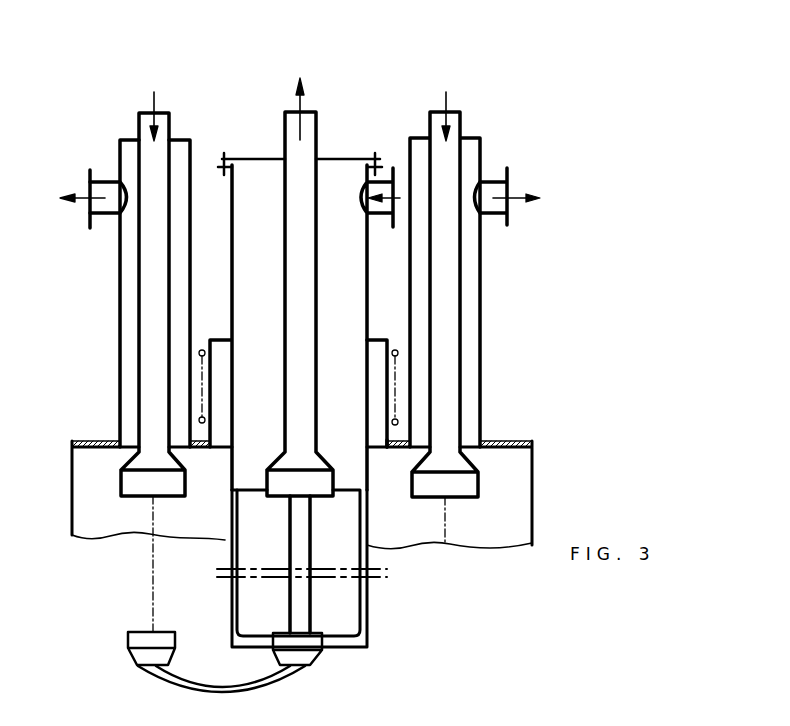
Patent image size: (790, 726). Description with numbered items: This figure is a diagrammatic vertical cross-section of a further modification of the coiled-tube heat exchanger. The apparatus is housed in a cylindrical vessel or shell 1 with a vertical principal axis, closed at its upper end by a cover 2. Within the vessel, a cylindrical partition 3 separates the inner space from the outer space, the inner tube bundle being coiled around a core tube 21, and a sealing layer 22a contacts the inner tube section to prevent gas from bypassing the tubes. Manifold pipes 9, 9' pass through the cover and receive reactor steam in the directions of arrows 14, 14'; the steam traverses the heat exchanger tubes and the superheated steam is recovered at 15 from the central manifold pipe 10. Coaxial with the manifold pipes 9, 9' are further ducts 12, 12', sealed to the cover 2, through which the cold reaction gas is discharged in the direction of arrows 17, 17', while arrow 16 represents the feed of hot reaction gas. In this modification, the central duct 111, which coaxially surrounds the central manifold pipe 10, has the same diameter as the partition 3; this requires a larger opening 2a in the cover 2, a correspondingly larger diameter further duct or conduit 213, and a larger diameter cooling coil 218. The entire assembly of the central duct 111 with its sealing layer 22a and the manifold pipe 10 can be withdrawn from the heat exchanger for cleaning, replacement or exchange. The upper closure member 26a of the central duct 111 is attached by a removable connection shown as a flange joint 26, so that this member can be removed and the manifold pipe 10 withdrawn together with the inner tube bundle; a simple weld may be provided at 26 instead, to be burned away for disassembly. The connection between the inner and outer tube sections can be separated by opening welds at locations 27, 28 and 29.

The cylindrical vessel or shell 1 is at (537, 482).
The cover 2 is at (513, 440).
The opening in the cover 2a is at (380, 444).
The cylindrical partition 3 is at (368, 605).
The manifold pipe 9 is at (463, 327).
The manifold pipe 9' is at (129, 389).
The central manifold pipe 10 is at (318, 142).
The further duct 12 is at (468, 292).
The further duct 12' is at (173, 284).
The arrow indicating introduction of reactor steam 14 is at (467, 108).
The arrow indicating introduction of reactor steam 14' is at (174, 108).
The superheated steam recovery point 15 is at (302, 103).
The arrow indicating hot reaction gas feed 16 is at (398, 200).
The arrow indicating cold reaction gas discharge 17 is at (516, 188).
The arrow indicating cold reaction gas discharge 17' is at (89, 216).
The core tube 21 is at (290, 535).
The sealing layer 22a is at (360, 513).
The flange joint 26 is at (226, 170).
The upper closure member 26a is at (368, 167).
The weld location 27 is at (236, 490).
The weld location 28 is at (238, 597).
The weld location 29 is at (240, 660).
The central duct 111 is at (232, 270).
The further duct or conduit 213 is at (382, 338).
The cooling coil 218 is at (396, 388).